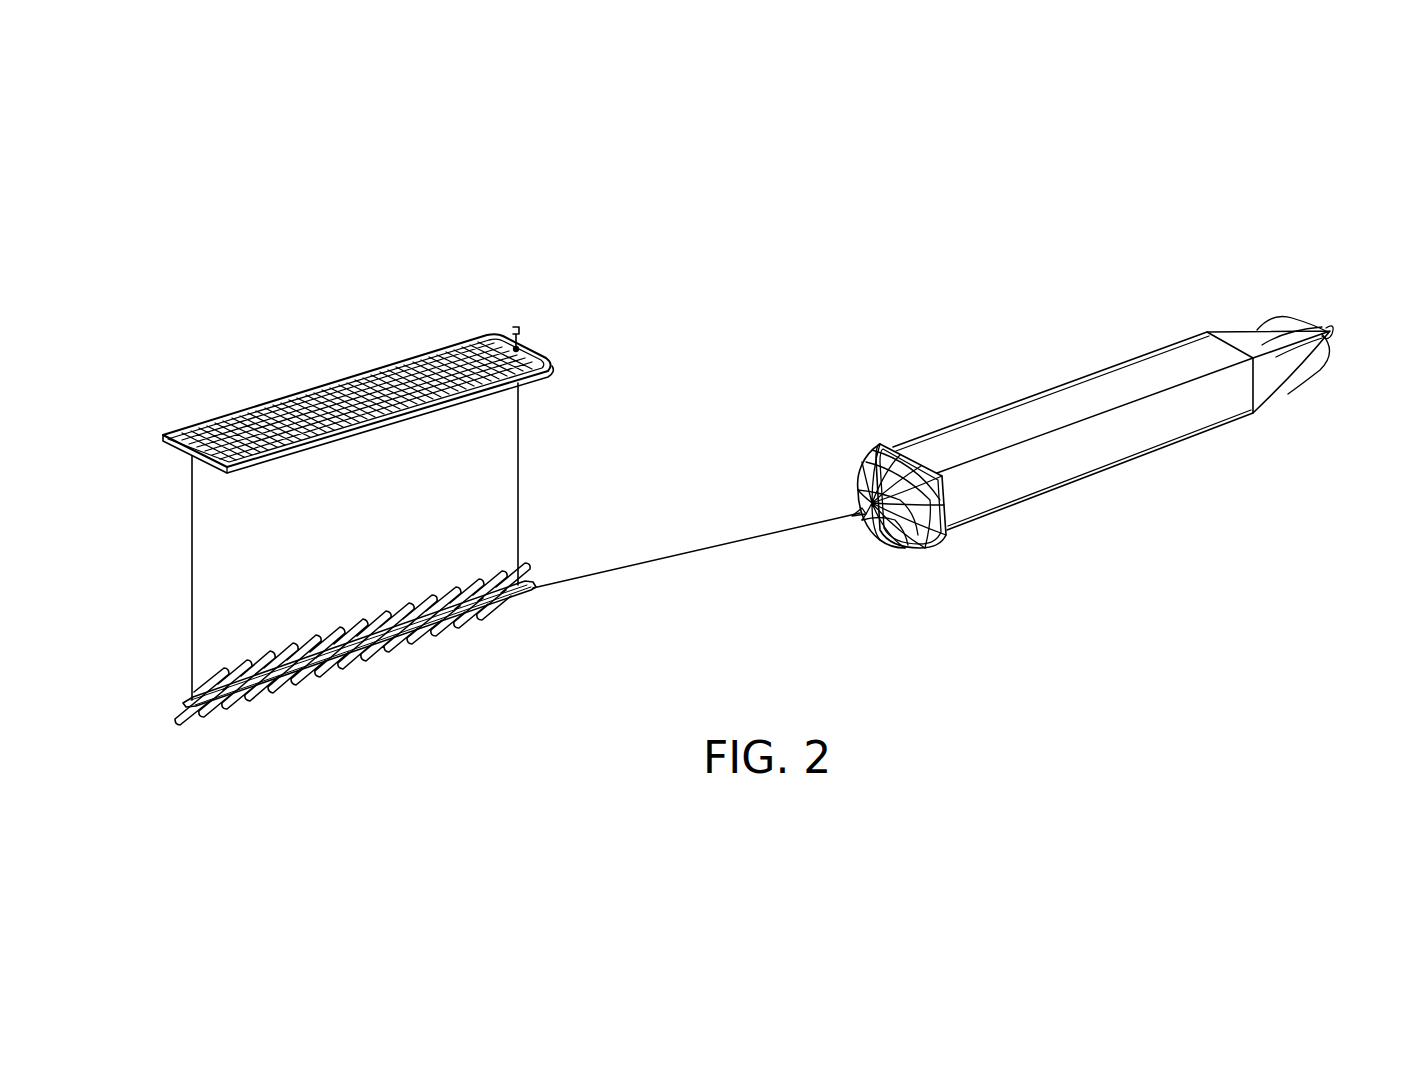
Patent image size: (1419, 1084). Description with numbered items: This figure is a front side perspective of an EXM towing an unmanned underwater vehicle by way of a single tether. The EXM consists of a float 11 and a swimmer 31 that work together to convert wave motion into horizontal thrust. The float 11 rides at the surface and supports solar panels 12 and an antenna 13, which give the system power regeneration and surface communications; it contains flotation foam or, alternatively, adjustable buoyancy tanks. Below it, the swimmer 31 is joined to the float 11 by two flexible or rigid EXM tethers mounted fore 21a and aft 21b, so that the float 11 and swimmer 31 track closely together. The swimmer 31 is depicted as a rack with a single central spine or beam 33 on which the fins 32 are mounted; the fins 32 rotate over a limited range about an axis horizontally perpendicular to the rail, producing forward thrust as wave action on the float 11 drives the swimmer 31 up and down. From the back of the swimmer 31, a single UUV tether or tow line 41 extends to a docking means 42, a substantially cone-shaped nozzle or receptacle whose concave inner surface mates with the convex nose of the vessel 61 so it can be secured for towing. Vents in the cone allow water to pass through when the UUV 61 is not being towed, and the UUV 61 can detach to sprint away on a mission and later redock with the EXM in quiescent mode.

The float 11 is at (162, 327).
The solar panels 12 is at (360, 380).
The antenna 13 is at (515, 326).
The fore tether 21a is at (192, 557).
The aft tether 21b is at (518, 491).
The swimmer 31 is at (162, 578).
The fins 32 is at (318, 631).
The central spine or beam 33 is at (368, 626).
The tether 41 is at (675, 558).
The docking means 42 is at (893, 543).
The UUV 61 is at (1348, 247).